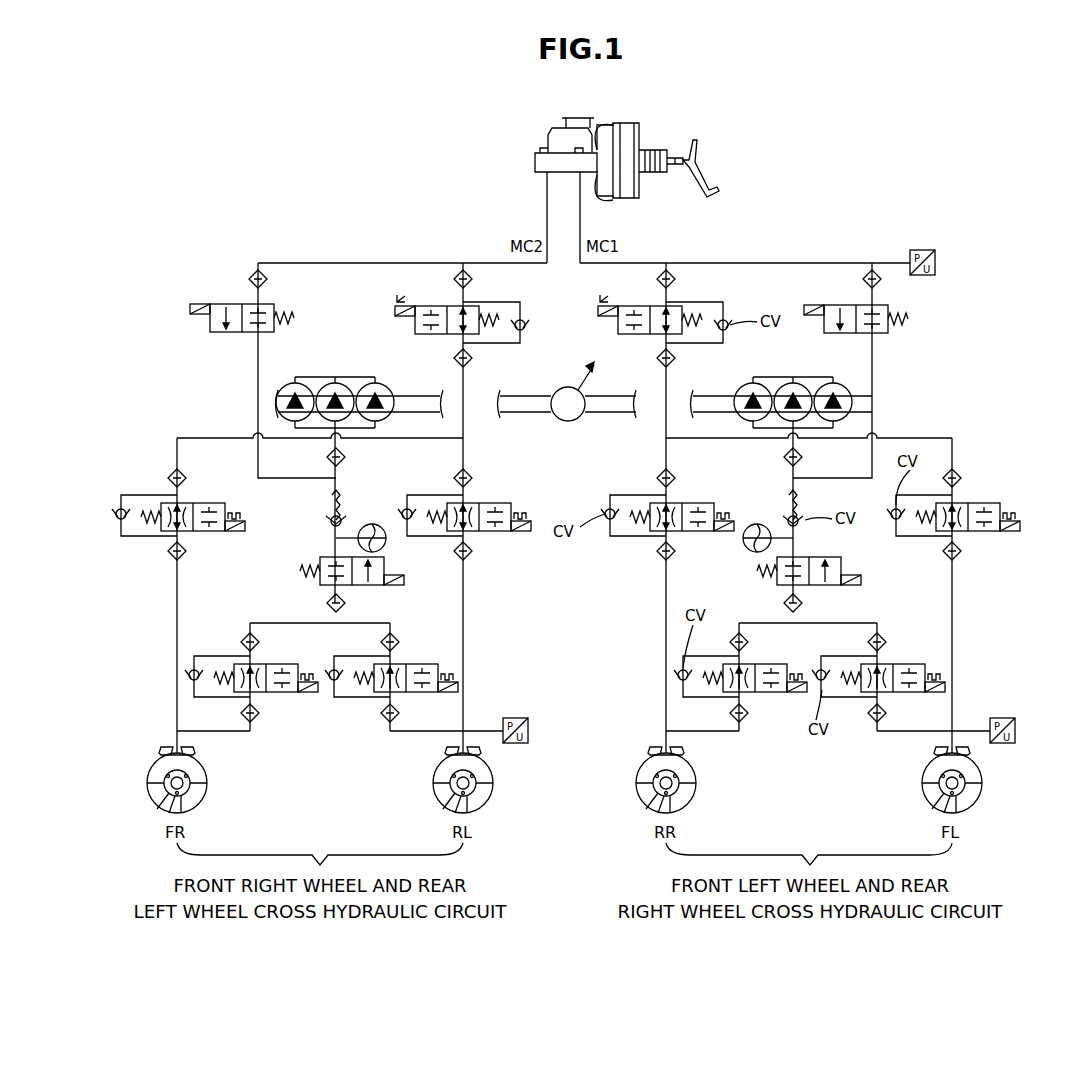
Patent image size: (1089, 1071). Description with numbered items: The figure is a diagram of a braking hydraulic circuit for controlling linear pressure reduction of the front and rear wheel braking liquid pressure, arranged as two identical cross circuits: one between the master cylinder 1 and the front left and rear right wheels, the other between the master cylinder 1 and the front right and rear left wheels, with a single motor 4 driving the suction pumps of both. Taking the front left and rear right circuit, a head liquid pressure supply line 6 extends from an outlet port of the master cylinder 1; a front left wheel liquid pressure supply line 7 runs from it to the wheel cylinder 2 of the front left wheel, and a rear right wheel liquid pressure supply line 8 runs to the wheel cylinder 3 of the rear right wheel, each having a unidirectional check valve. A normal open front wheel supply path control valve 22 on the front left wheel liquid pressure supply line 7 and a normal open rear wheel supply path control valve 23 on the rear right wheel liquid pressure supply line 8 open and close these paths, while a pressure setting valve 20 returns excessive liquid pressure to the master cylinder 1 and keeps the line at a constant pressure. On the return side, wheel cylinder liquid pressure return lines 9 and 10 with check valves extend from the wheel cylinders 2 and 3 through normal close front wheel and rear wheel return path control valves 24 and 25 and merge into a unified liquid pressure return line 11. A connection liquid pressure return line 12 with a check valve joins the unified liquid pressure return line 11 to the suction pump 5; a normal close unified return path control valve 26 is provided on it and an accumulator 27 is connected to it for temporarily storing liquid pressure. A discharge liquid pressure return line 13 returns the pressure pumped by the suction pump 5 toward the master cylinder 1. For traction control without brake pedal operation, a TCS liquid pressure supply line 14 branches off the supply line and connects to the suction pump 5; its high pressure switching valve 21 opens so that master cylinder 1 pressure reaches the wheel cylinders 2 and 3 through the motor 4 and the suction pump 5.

The master cylinder 1 is at (630, 130).
The wheel cylinder 2 is at (975, 788).
The wheel cylinder 3 is at (690, 788).
The motor 4 is at (570, 422).
The suction pump 5 is at (725, 393).
The head liquid pressure supply line 6 is at (778, 262).
The front left wheel liquid pressure supply line 7 is at (953, 607).
The rear right wheel liquid pressure supply line 8 is at (664, 625).
The wheel cylinder liquid pressure return line 9 is at (885, 732).
The wheel cylinder liquid pressure return line 10 is at (723, 732).
The unified liquid pressure return line 11 is at (877, 623).
The connection liquid pressure return line 12 is at (793, 547).
The discharge liquid pressure return line 13 is at (808, 377).
The TCS liquid pressure supply line 14 is at (874, 401).
The pressure setting valve 20 is at (650, 333).
The high pressure switching valve 21 is at (884, 333).
The front wheel supply path control valve 22 is at (975, 531).
The rear wheel supply path control valve 23 is at (697, 531).
The front wheel return path control valve 24 is at (905, 664).
The rear wheel return path control valve 25 is at (763, 691).
The unified return path control valve 26 is at (841, 571).
The accumulator 27 is at (757, 553).